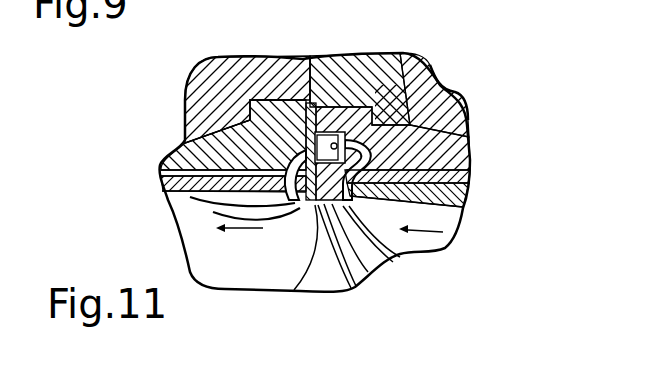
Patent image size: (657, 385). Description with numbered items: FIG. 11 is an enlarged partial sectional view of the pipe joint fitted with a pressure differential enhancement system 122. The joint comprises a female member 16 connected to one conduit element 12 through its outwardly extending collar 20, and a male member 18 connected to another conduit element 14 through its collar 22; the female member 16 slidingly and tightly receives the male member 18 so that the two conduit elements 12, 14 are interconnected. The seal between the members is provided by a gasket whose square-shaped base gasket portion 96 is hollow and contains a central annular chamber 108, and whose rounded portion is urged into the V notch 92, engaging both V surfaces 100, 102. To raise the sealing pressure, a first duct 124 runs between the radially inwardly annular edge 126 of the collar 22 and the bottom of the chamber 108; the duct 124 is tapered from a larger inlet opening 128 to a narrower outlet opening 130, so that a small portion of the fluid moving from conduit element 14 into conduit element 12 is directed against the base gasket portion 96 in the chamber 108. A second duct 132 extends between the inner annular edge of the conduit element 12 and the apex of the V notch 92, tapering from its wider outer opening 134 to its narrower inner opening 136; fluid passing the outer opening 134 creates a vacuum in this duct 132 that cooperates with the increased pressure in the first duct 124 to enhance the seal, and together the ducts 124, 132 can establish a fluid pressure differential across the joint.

The conduit element 12 is at (163, 188).
The conduit element 14 is at (467, 194).
The female member 16 is at (260, 58).
The male member 18 is at (418, 70).
The collar 20 is at (210, 135).
The collar 22 is at (452, 159).
The V notch 92 is at (298, 153).
The base gasket portion 96 is at (314, 106).
The surface 100 is at (309, 104).
The surface 102 is at (310, 212).
The central annular chamber 108 is at (457, 90).
The pressure differential enhancement system 122 is at (395, 153).
The first duct 124 is at (467, 173).
The radially inwardly annular edge 126 is at (297, 290).
The inlet opening 128 is at (357, 208).
The outlet opening 130 is at (373, 115).
The second duct 132 is at (207, 173).
The outer opening 134 is at (160, 168).
The inner opening 136 is at (247, 117).